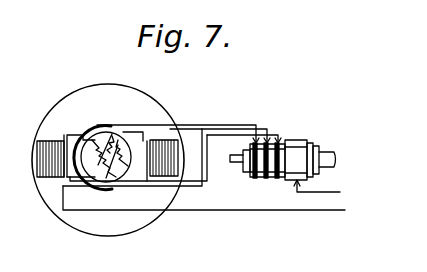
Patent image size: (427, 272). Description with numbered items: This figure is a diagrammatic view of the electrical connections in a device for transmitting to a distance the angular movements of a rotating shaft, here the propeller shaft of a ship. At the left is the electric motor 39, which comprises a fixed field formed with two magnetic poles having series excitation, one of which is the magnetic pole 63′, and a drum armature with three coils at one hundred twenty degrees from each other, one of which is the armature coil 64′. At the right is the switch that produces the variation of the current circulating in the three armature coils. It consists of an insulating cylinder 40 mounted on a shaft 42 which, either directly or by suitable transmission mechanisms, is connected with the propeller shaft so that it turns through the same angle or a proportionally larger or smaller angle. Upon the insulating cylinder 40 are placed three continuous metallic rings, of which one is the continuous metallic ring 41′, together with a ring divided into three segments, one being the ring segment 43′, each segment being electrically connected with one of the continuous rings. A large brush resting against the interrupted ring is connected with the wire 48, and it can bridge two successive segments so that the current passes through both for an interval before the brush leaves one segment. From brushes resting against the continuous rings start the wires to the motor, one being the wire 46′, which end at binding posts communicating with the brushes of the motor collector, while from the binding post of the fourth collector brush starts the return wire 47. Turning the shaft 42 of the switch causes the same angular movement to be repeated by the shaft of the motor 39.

The electric motor 39 is at (58, 209).
The insulating cylinder 40 is at (323, 146).
The shaft 42 is at (336, 160).
The return wire 47 is at (219, 204).
The wire 48 is at (334, 192).
The continuous metallic ring 41′ is at (277, 180).
The ring segment 43′ is at (305, 175).
The wire 46′ is at (182, 125).
The magnetic pole 63′ is at (143, 132).
The armature coil 64′ is at (107, 133).